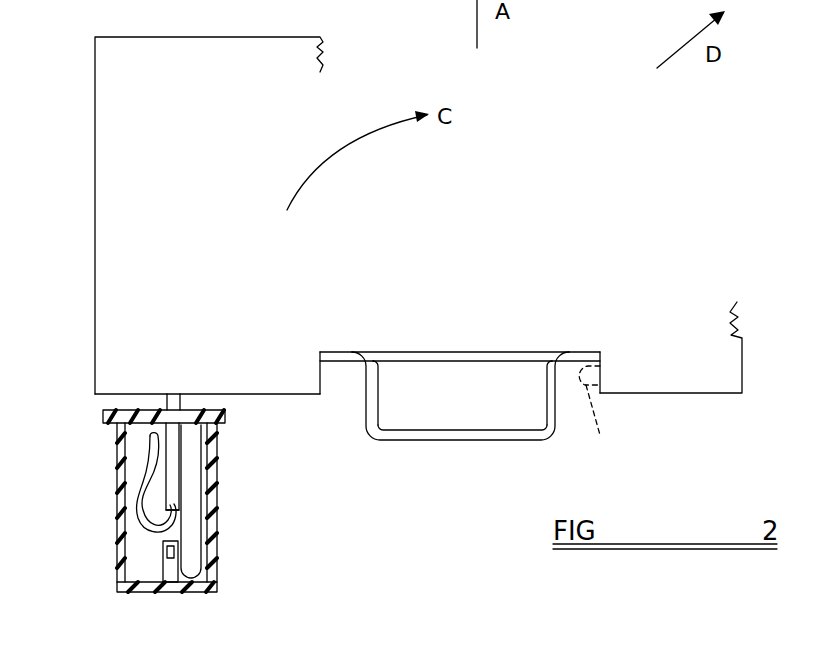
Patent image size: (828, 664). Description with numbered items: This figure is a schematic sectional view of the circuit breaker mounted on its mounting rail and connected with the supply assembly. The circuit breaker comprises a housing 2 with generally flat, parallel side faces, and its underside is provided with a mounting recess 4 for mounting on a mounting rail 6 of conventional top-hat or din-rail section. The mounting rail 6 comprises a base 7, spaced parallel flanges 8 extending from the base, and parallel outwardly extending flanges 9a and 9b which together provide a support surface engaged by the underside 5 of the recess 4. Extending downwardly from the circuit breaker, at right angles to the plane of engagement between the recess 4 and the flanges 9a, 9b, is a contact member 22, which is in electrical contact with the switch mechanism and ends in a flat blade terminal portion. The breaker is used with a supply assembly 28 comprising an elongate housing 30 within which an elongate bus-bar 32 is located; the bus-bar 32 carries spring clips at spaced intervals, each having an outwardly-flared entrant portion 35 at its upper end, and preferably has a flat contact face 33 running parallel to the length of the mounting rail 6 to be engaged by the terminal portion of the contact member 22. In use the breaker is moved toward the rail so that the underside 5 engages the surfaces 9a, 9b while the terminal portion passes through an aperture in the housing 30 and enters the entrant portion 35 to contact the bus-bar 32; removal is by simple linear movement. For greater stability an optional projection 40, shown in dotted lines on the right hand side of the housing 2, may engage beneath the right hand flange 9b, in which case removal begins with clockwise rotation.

The housing 2 is at (418, 215).
The mounting recess 4 is at (347, 375).
The underside of the recess 5 is at (426, 355).
The mounting rail 6 is at (535, 446).
The base 7 is at (440, 441).
The flanges 8 is at (546, 392).
The outwardly extending flange 9a is at (337, 356).
The outwardly extending flange 9b is at (580, 351).
The projection 40 is at (604, 402).
The contact member 22 is at (172, 492).
The supply assembly 28 is at (131, 597).
The elongate housing 30 is at (109, 532).
The bus-bar 32 is at (192, 535).
The flat contact face 33 is at (170, 460).
The outwardly-flared entrant portion 35 is at (152, 441).